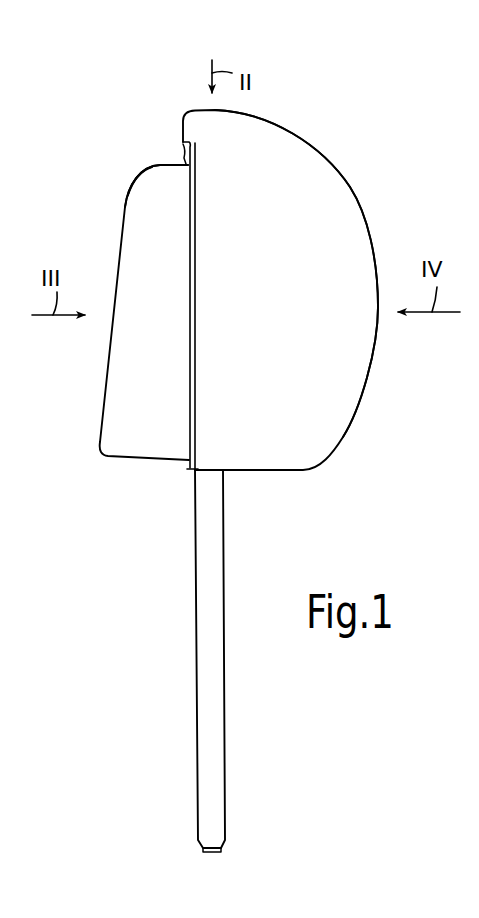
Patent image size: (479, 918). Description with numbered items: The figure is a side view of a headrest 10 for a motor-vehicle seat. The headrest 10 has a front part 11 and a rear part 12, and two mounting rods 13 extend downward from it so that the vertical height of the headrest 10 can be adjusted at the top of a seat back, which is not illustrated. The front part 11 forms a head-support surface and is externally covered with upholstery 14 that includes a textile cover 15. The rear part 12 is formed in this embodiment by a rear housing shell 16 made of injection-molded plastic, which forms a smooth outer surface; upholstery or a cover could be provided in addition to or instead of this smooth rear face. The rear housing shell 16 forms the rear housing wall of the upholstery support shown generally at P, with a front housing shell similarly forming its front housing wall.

The headrest 10 is at (234, 481).
The front part 11 is at (372, 197).
The rear part 12 is at (88, 428).
The mounting rods 13 is at (192, 632).
The upholstery 14 is at (318, 145).
The textile cover 15 is at (377, 257).
The rear housing shell 16 is at (143, 163).
The upholstery support P is at (123, 190).